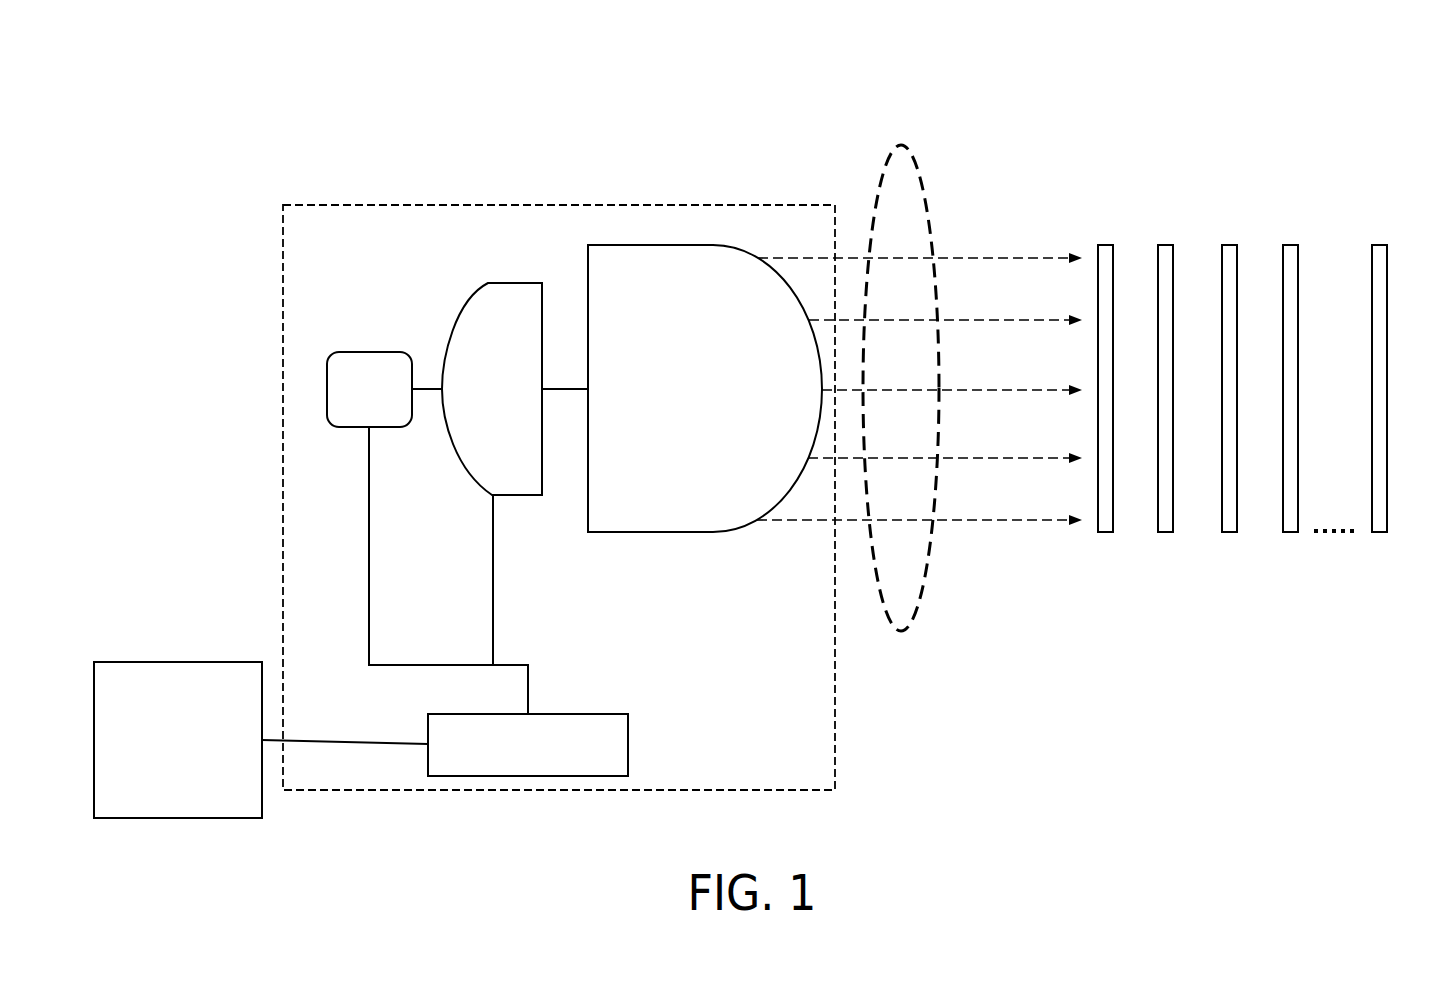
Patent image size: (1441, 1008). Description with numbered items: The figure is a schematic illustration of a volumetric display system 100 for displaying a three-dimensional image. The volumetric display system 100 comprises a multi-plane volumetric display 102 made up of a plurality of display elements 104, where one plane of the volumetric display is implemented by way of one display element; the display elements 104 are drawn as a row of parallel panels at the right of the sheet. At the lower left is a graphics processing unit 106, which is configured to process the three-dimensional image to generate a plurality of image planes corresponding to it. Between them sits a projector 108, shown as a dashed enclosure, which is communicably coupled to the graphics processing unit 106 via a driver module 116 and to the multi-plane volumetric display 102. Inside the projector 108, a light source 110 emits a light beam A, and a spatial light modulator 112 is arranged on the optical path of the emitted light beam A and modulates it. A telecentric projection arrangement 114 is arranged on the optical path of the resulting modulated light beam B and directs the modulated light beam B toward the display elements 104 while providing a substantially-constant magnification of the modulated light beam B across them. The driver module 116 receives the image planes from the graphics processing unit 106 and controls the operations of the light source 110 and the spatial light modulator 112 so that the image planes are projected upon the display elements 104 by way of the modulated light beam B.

The volumetric display system 100 is at (1366, 123).
The multi-plane volumetric display 102 is at (1078, 172).
The display elements 104 is at (1092, 233).
The graphics processing unit 106 is at (185, 818).
The projector 108 is at (303, 185).
The light source 110 is at (347, 427).
The spatial light modulator 112 is at (462, 475).
The telecentric projection arrangement 114 is at (610, 535).
The driver module 116 is at (531, 776).
The light beam A is at (429, 387).
The modulated light beam B is at (572, 391).